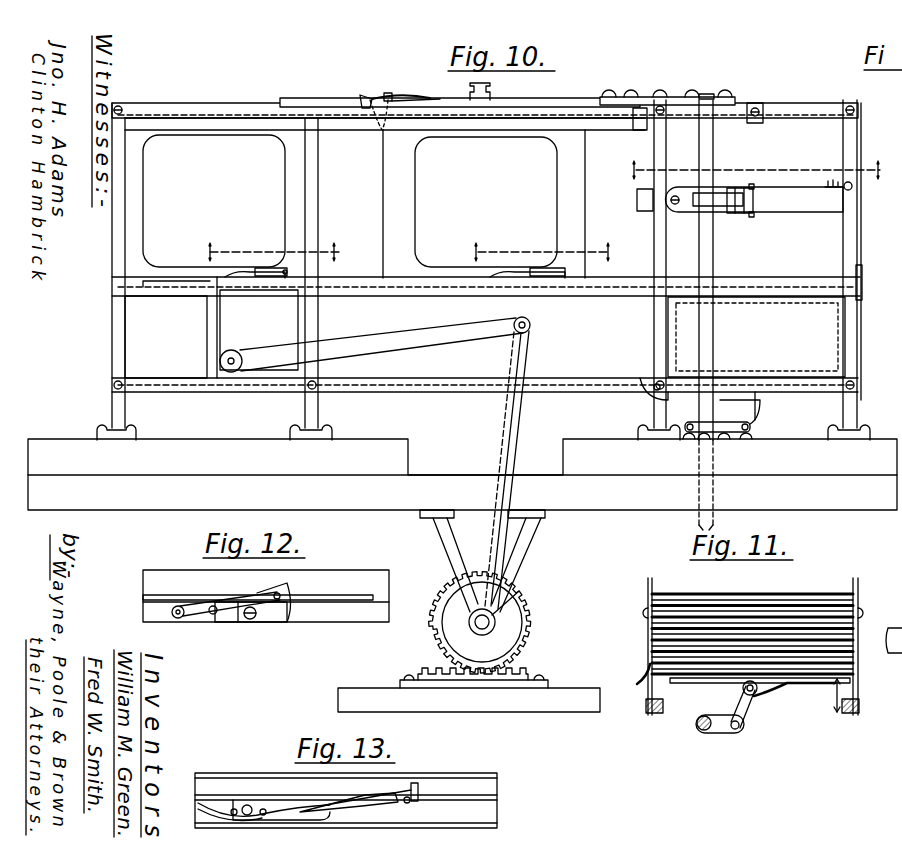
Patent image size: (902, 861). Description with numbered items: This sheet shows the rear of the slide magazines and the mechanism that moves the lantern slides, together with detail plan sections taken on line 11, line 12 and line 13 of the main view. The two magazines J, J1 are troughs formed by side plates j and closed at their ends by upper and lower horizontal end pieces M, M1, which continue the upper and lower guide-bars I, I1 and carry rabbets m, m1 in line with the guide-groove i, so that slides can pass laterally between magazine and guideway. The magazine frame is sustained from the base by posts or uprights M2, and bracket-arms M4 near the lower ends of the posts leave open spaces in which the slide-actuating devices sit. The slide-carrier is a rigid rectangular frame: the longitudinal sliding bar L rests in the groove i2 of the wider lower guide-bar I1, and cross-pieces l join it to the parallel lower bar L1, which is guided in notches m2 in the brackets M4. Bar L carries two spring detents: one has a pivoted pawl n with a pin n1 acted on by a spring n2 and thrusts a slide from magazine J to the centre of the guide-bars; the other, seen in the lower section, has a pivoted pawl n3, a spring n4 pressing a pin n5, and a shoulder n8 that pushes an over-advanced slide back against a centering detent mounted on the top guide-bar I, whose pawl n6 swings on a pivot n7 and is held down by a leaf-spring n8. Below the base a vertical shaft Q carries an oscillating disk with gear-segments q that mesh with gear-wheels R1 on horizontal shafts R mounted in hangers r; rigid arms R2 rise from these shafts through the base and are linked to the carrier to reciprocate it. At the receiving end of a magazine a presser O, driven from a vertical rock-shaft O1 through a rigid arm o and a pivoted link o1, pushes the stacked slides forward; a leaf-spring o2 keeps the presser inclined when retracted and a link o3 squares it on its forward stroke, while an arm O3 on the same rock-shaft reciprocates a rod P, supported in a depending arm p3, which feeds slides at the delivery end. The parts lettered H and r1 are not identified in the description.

In FIG. 10, the base H is at (462, 474).
In FIG. 10, the upper horizontal end piece M is at (212, 108).
In FIG. 10, the rabbet m is at (256, 114).
In FIG. 10, the upper guide-bar I is at (562, 106).
In FIG. 10, the pivot n7 is at (363, 98).
In FIG. 12, the pivot n7 is at (258, 618).
In FIG. 10, the pawl n6 is at (376, 94).
In FIG. 10, the spring n2 is at (392, 94).
In FIG. 12, the spring n2 is at (234, 618).
In FIG. 10, the leaf-spring n8 is at (405, 106).
In FIG. 13, the leaf-spring n8 is at (416, 790).
In FIG. 10, the slide magazine J is at (112, 245).
In FIG. 10, the side plate j is at (320, 203).
In FIG. 10, the slide magazine J1 is at (866, 243).
In FIG. 10, the rabbet m1 is at (165, 280).
In FIG. 10, the section line 12- 12 is at (273, 253).
In FIG. 10, the section line 13- 13 is at (540, 253).
In FIG. 10, the section line 11- 11 is at (756, 170).
In FIG. 10, the pivoted pawl n is at (265, 269).
In FIG. 12, the pivoted pawl n is at (280, 618).
In FIG. 10, the pin n1 is at (530, 270).
In FIG. 12, the pin n1 is at (277, 593).
In FIG. 13, the pin n1 is at (380, 798).
In FIG. 10, the bracket-arm M4 is at (215, 386).
In FIG. 10, the post M2 is at (118, 360).
In FIG. 10, the notch m2 is at (280, 386).
In FIG. 10, the lower horizontal end piece M1 is at (196, 292).
In FIG. 10, the cross-piece l is at (220, 330).
In FIG. 10, the sliding bar L is at (369, 287).
In FIG. 12, the sliding bar L is at (355, 620).
In FIG. 13, the sliding bar L is at (498, 809).
In FIG. 10, the lower bar L1 is at (459, 382).
In FIG. 10, the link r1 is at (411, 343).
In FIG. 10, the groove i2 is at (440, 289).
In FIG. 12, the groove i2 is at (346, 591).
In FIG. 13, the groove i2 is at (481, 795).
In FIG. 10, the lower guide-bar I1 is at (577, 289).
In FIG. 10, the rigid arm R2 is at (512, 422).
In FIG. 10, the hanger r is at (520, 540).
In FIG. 10, the horizontal shaft R is at (487, 621).
In FIG. 10, the gear-wheel R1 is at (512, 628).
In FIG. 10, the gear-segment q is at (425, 668).
In FIG. 10, the vertical shaft Q is at (469, 700).
In FIG. 10, the leaf-spring o2 is at (810, 202).
In FIG. 11, the leaf-spring o2 is at (767, 688).
In FIG. 10, the rigid arm o is at (721, 207).
In FIG. 11, the rigid arm o is at (723, 733).
In FIG. 10, the pivoted link o1 is at (743, 194).
In FIG. 11, the pivoted link o1 is at (740, 716).
In FIG. 10, the link o3 is at (834, 181).
In FIG. 11, the link o3 is at (834, 700).
In FIG. 10, the presser O is at (778, 249).
In FIG. 11, the presser O is at (695, 682).
In FIG. 10, the rock-shaft O1 is at (712, 329).
In FIG. 11, the rock-shaft O1 is at (700, 728).
In FIG. 10, the rod P is at (756, 427).
In FIG. 10, the arm O3 is at (738, 432).
In FIG. 10, the depending arm p3 is at (756, 408).
In FIG. 12, the guide-groove i is at (309, 587).
In FIG. 13, the pivoted pawl n3 is at (415, 809).
In FIG. 13, the spring n4 is at (366, 805).
In FIG. 13, the pin n5 is at (418, 791).